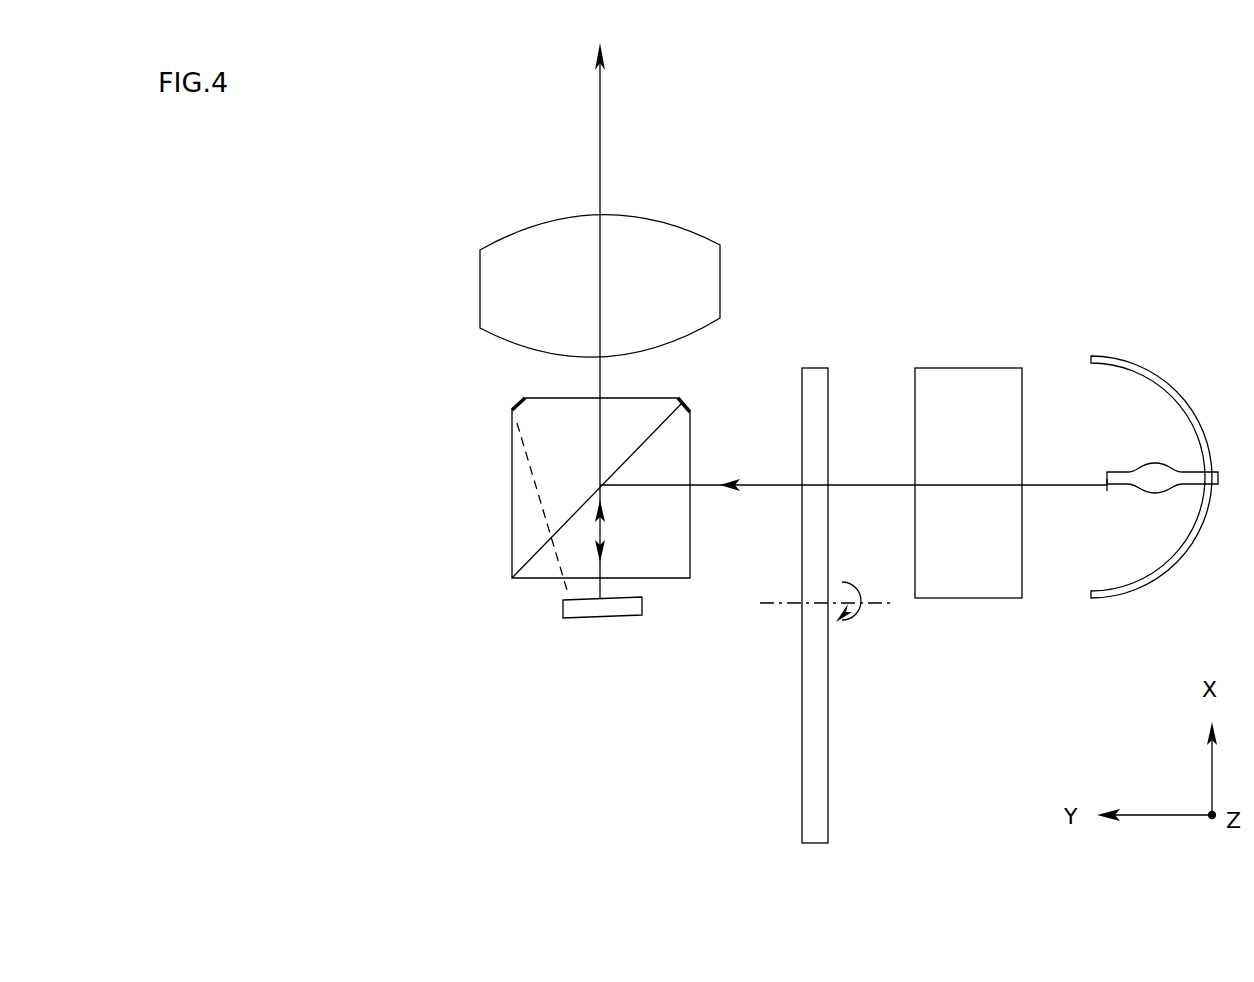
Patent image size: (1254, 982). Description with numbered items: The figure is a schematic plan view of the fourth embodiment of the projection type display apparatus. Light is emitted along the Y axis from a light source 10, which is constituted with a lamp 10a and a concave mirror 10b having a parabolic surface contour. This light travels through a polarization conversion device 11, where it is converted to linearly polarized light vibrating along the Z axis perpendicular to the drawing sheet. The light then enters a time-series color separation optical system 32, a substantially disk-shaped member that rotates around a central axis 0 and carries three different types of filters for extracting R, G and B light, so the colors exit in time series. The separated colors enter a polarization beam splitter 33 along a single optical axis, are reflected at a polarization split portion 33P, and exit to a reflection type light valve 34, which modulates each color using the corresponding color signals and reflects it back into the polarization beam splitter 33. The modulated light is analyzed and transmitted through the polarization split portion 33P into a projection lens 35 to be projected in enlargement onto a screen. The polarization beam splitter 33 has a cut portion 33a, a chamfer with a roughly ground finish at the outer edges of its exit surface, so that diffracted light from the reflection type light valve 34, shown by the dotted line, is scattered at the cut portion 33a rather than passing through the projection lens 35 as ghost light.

The projection lens 35 is at (717, 240).
The polarization beam splitter 33 is at (512, 502).
The polarization split portion 33P is at (545, 556).
The cut portion 33a is at (515, 412).
The reflection type light valve 34 is at (568, 597).
The time-series color separation optical system 32 is at (828, 820).
The central axis 0 is at (785, 603).
The polarization conversion device 11 is at (965, 598).
The light source 10 is at (1146, 493).
The lamp 10a is at (1118, 482).
The concave mirror 10b is at (1127, 368).